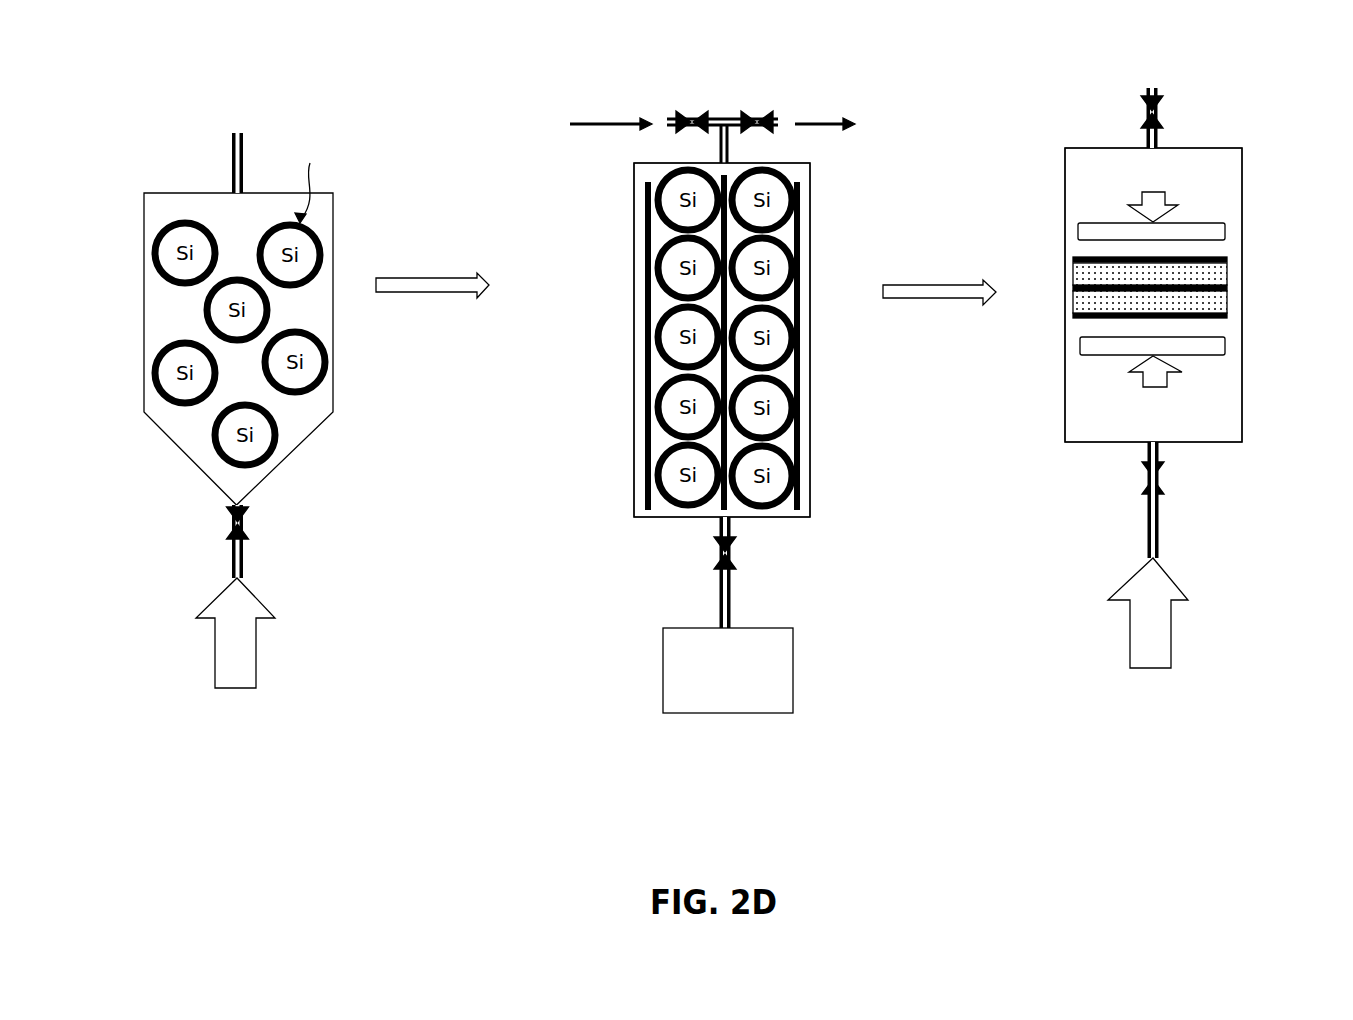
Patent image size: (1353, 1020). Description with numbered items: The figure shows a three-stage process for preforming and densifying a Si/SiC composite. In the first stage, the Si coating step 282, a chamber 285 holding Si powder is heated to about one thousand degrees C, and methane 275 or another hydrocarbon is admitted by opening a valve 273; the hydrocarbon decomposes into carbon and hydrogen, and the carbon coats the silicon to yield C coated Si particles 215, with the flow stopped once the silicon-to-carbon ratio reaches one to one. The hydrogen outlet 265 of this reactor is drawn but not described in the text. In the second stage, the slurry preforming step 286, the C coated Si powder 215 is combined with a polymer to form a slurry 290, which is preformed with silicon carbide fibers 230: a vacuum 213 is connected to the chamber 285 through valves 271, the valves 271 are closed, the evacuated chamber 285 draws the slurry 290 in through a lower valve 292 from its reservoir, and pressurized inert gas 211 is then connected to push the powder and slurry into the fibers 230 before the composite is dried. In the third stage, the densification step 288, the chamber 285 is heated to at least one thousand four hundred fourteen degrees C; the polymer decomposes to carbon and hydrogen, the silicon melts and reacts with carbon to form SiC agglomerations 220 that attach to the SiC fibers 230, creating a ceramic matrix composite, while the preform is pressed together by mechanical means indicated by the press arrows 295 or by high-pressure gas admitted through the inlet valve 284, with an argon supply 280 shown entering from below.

The Si coating step 282 is at (256, 56).
The hydrogen gas supply 265 is at (278, 137).
The valve 273 is at (277, 541).
The methane 275 is at (266, 633).
The slurry preforming step 286 is at (746, 31).
The valves 271 is at (688, 108).
The pressurized inert gas 211 is at (573, 130).
The vacuum 213 is at (833, 128).
The silicon carbide fibers 230 is at (937, 342).
The chamber 285 is at (979, 332).
The C coated Si particles 215 is at (688, 520).
The valve 292 is at (718, 578).
The slurry 290 is at (772, 670).
The densification step 288 is at (1163, 45).
The valve 284 is at (1191, 118).
The press 295 is at (1163, 284).
The agglomerations of SiC 220 is at (1112, 302).
The argon gas supply 280 is at (1183, 555).